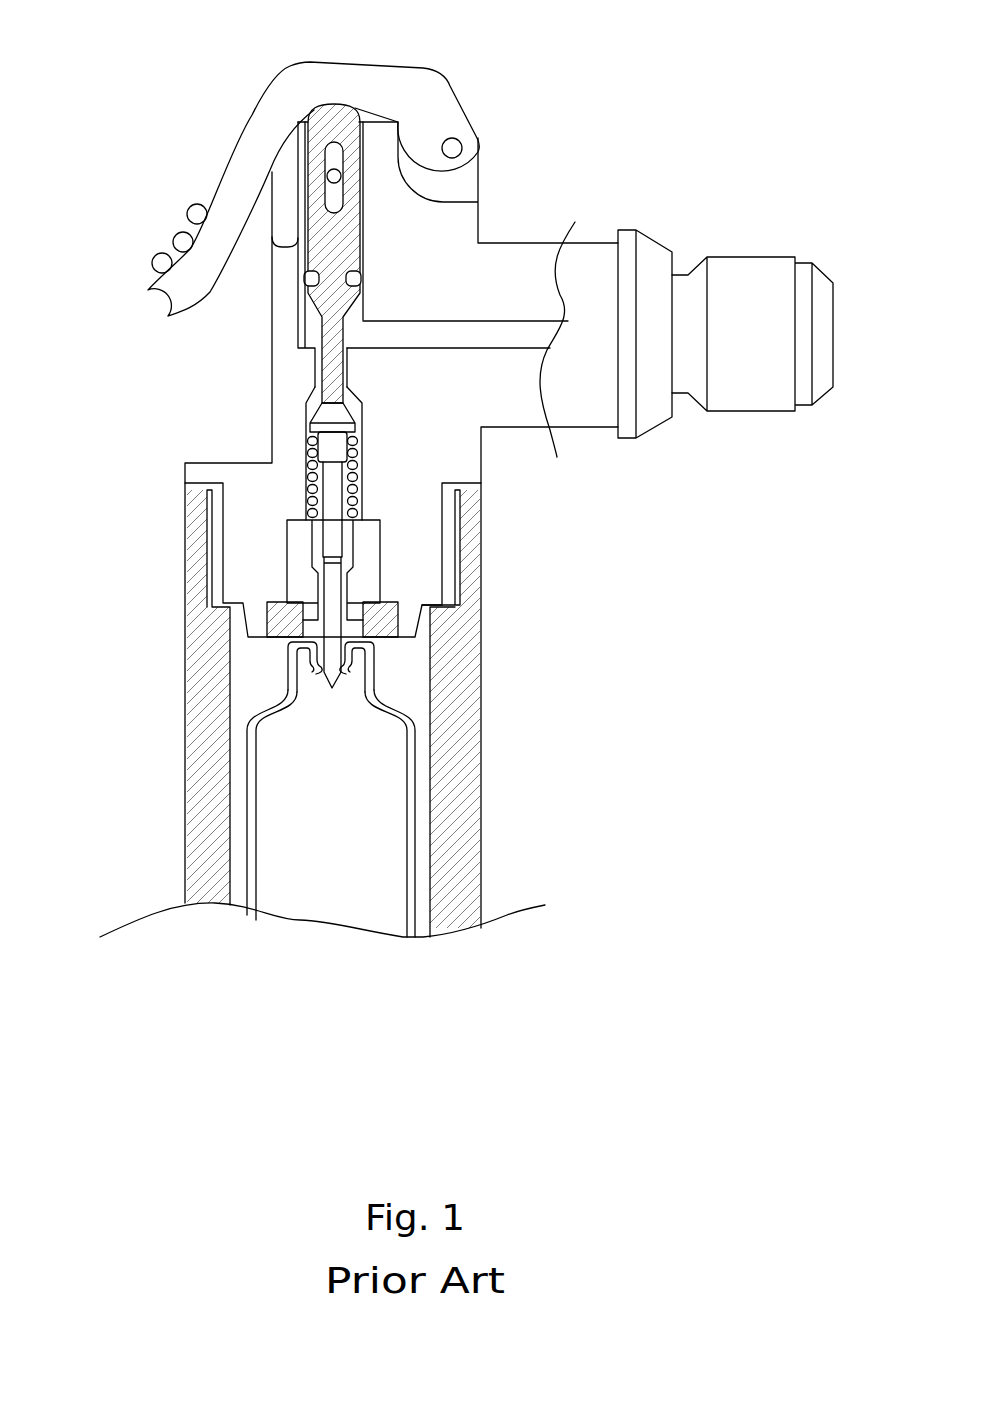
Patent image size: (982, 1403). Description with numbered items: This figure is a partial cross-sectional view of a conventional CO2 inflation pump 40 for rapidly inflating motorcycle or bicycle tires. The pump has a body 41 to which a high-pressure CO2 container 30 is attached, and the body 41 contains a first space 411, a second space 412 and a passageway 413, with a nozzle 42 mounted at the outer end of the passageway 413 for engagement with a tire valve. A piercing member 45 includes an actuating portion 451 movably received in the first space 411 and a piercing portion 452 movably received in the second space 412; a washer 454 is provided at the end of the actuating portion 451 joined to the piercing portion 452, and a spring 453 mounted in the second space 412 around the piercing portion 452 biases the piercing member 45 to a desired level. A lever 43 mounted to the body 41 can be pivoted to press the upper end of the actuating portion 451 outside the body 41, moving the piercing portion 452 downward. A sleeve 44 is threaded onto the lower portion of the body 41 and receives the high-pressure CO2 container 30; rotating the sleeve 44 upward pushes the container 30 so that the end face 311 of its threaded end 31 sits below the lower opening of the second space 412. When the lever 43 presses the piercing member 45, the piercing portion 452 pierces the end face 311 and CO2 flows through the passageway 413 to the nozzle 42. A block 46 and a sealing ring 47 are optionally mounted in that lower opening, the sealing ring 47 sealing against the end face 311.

The high-pressure CO2 container 30 is at (413, 875).
The threaded end 31 is at (372, 655).
The end face 311 is at (318, 668).
The CO2 inflation pump 40 is at (536, 190).
The body 41 is at (462, 445).
The first space 411 is at (310, 328).
The second space 412 is at (310, 400).
The passageway 413 is at (535, 337).
The nozzle 42 is at (758, 392).
The lever 43 is at (367, 85).
The sleeve 44 is at (453, 785).
The piercing member 45 is at (302, 252).
The actuating portion 451 is at (323, 120).
The piercing portion 452 is at (330, 603).
The spring 453 is at (303, 467).
The washer 454 is at (333, 412).
The block 46 is at (293, 553).
The sealing ring 47 is at (377, 620).